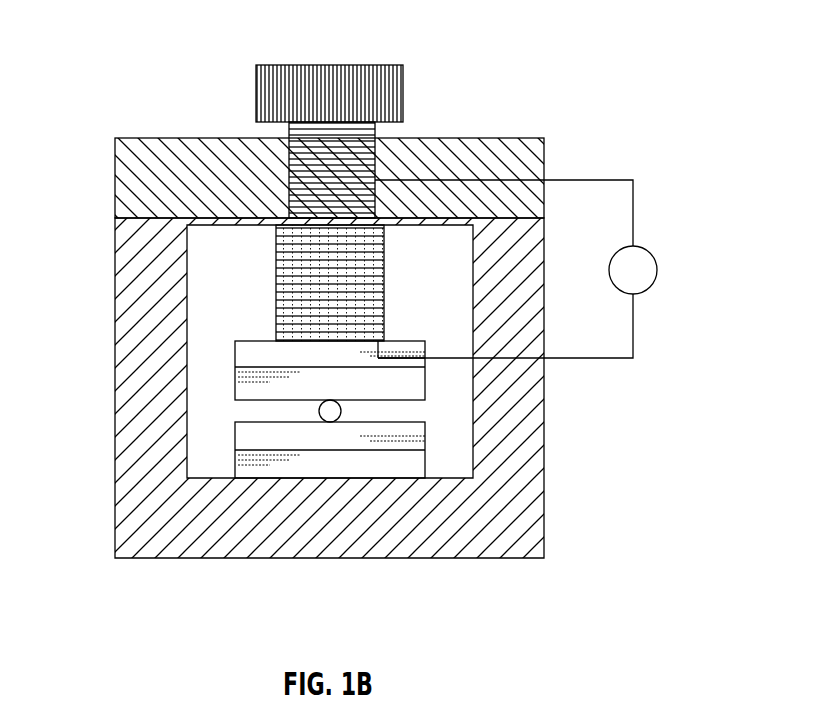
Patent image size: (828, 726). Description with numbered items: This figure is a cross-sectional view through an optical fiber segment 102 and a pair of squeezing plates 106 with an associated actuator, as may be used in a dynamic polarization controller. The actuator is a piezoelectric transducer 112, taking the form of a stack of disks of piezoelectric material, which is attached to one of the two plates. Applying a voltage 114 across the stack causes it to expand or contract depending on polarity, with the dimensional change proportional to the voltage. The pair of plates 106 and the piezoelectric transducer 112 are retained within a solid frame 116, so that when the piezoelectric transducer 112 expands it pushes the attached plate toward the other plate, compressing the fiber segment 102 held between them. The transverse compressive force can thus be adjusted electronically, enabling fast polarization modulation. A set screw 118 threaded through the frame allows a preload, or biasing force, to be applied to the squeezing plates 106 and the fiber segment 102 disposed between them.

The optical fiber segment 102 is at (330, 412).
The pair of squeezing plates 106 is at (235, 368).
The piezoelectric transducer 112 is at (275, 281).
The voltage 114 is at (657, 271).
The solid frame 116 is at (137, 286).
The set screw 118 is at (380, 157).